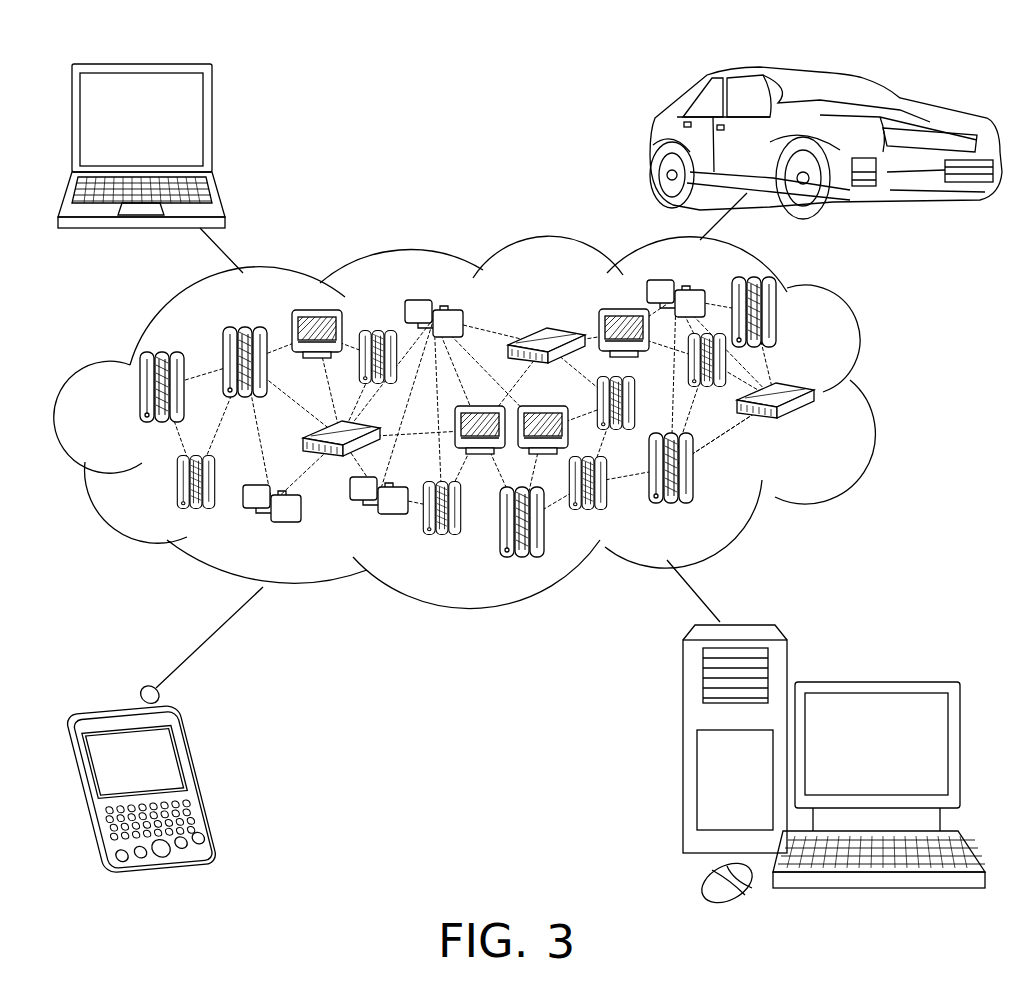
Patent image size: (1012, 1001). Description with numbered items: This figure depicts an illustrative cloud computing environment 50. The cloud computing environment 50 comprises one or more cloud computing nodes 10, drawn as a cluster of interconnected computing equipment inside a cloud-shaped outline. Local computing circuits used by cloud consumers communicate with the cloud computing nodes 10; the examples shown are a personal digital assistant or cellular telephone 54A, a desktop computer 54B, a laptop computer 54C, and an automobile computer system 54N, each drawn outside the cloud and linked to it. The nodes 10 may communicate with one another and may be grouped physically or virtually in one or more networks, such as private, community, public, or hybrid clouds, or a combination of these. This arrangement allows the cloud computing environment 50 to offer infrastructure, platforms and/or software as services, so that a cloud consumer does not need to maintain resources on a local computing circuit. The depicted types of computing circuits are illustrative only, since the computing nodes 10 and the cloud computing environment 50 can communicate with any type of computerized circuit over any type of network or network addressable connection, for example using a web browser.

The cloud computing node 10 is at (815, 425).
The cloud computing environment 50 is at (880, 389).
The personal digital assistant (PDA) or cellular telephone 54A is at (200, 777).
The desktop computer 54B is at (873, 680).
The laptop computer 54C is at (210, 127).
The automobile computer system 54N is at (655, 143).